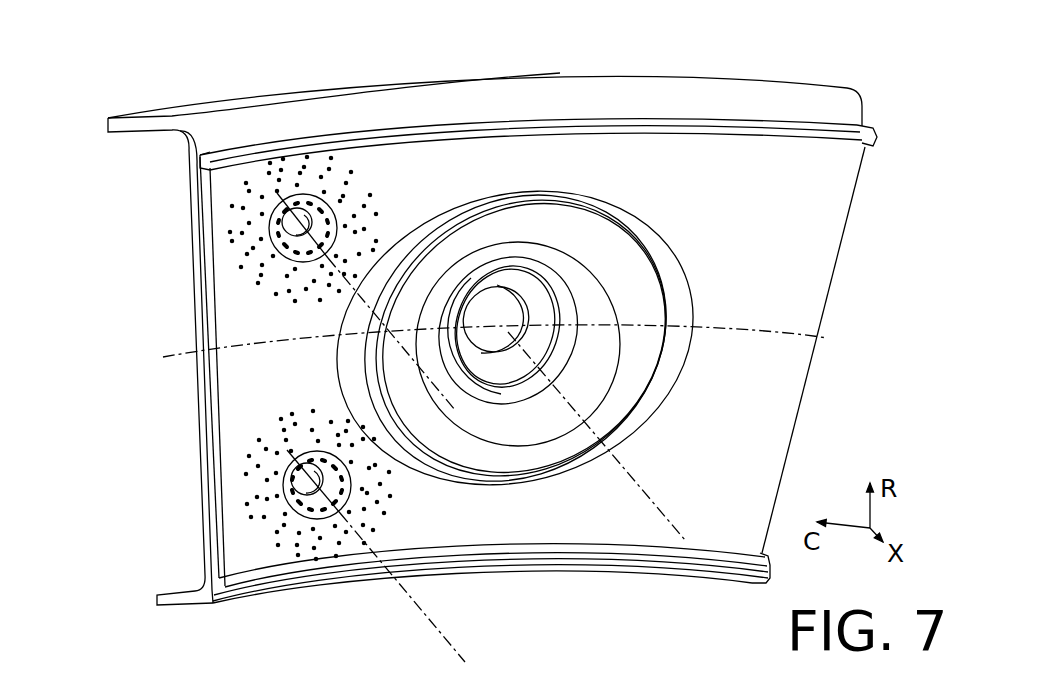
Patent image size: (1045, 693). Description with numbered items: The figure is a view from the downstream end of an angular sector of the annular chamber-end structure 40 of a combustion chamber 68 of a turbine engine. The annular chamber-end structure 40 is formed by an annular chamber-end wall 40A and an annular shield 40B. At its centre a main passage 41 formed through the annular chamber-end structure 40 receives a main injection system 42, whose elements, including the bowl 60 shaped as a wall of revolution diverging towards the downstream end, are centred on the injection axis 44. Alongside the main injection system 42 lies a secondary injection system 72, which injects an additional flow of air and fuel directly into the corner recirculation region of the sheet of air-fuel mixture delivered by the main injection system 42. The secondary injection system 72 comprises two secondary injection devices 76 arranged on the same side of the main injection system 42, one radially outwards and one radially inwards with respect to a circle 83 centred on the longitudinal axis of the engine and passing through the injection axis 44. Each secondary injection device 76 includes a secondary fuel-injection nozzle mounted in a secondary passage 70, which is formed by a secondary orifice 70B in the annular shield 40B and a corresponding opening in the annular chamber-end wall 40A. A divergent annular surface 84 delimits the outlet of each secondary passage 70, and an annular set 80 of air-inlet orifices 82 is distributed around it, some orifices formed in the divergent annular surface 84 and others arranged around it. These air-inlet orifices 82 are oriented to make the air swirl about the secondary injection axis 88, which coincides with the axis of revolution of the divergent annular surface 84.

The combustion chamber 68 is at (470, 308).
The annular chamber-end structure 40 is at (450, 361).
The annular chamber-end wall 40A is at (205, 367).
The annular shield 40B is at (237, 420).
The main passage 41 is at (576, 323).
The main injection system 42 is at (627, 233).
The injection axis 44 is at (662, 503).
The bowl 60 is at (580, 226).
The secondary passage 70 is at (364, 360).
The secondary orifice 70B is at (298, 208).
The secondary injection system 72 is at (216, 285).
The secondary injection device 76 is at (227, 228).
The annular set of air-inlet orifices 80 is at (246, 489).
The air-inlet orifice 82 is at (240, 485).
The circle 83 is at (785, 333).
The divergent annular surface 84 is at (337, 500).
The secondary injection axis 88 is at (367, 297).